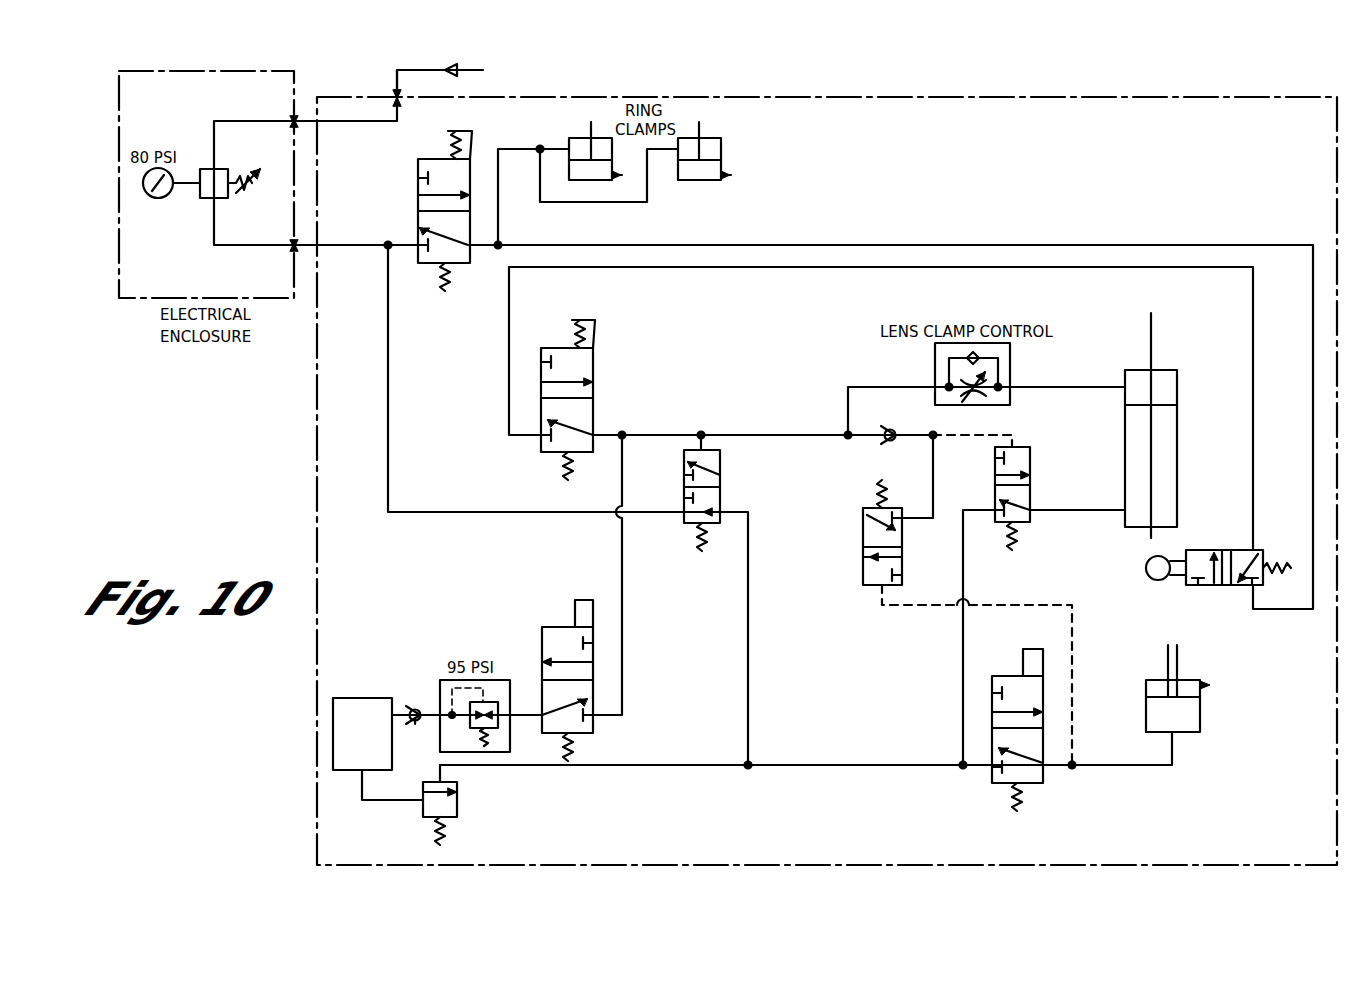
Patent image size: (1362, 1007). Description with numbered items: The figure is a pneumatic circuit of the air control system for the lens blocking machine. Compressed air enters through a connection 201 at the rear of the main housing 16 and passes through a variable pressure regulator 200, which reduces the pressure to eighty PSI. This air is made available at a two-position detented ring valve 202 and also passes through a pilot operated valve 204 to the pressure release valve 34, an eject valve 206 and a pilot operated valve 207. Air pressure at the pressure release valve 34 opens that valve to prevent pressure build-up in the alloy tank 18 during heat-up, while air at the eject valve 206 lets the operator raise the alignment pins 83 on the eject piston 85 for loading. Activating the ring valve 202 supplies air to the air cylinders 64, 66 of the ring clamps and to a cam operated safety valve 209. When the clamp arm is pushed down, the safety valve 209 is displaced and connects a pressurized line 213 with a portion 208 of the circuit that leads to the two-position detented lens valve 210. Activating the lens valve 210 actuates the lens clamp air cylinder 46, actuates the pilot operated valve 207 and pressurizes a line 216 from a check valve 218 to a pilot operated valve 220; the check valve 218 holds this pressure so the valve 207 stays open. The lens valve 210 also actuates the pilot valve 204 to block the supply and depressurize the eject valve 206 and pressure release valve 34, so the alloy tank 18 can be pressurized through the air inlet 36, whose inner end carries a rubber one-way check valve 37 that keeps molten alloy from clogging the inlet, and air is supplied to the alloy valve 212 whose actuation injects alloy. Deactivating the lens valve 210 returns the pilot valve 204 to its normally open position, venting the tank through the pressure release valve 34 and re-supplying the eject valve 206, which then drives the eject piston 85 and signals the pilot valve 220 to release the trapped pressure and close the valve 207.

The main housing 16 is at (316, 730).
The alloy tank 18 is at (356, 690).
The pressure release valve 34 is at (420, 810).
The pressurized air inlet 36 is at (403, 706).
The one-way check valve 37 is at (416, 723).
The air cylinder 46 is at (1177, 445).
The air cylinder 64 is at (590, 183).
The air cylinder 66 is at (700, 182).
The alignment pins 83 is at (1166, 650).
The air cylinder 85 is at (1186, 735).
The variable pressure regulator 200 is at (202, 199).
The connection 201 is at (392, 96).
The 2-position detented valve 202 is at (418, 190).
The pilot operated valve 204 is at (720, 492).
The eject valve 206 is at (1046, 688).
The pilot operated valve 207 is at (1032, 467).
The portion of the circuit 208 is at (848, 268).
The cam operated safety valve 209 is at (1200, 549).
The lens valve 210 is at (593, 371).
The alloy valve 212 is at (540, 638).
The pressurized line 213 is at (863, 244).
The line 216 is at (931, 464).
The check valve 218 is at (892, 429).
The pilot operated valve 220 is at (862, 552).